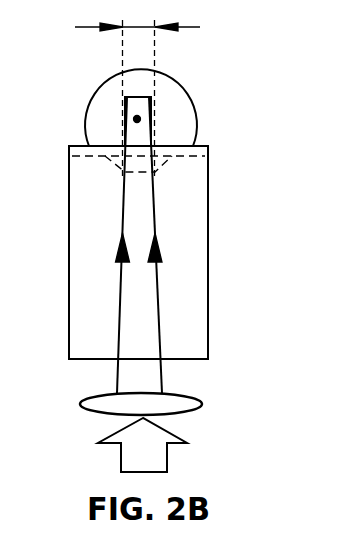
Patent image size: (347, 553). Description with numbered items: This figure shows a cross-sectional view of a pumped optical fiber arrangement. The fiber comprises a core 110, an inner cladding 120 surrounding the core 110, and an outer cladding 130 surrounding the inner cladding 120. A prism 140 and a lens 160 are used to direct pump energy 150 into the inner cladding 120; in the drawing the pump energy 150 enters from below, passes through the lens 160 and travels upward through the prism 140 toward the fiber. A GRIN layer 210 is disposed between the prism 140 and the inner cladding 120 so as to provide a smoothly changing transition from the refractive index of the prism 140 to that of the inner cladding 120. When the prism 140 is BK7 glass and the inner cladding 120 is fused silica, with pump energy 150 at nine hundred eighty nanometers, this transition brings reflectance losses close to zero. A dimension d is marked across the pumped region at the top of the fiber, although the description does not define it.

The core 110 is at (125, 122).
The inner cladding 120 is at (150, 98).
The outer cladding 130 is at (182, 126).
The prism 140 is at (80, 338).
The pump energy 150 is at (133, 449).
The lens 160 is at (102, 403).
The GRIN layer 210 is at (68, 150).
The aperture width d is at (137, 89).